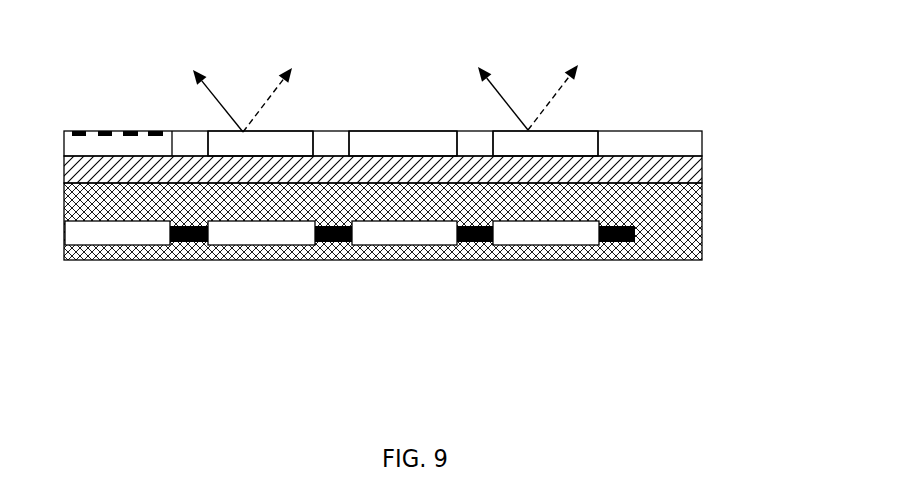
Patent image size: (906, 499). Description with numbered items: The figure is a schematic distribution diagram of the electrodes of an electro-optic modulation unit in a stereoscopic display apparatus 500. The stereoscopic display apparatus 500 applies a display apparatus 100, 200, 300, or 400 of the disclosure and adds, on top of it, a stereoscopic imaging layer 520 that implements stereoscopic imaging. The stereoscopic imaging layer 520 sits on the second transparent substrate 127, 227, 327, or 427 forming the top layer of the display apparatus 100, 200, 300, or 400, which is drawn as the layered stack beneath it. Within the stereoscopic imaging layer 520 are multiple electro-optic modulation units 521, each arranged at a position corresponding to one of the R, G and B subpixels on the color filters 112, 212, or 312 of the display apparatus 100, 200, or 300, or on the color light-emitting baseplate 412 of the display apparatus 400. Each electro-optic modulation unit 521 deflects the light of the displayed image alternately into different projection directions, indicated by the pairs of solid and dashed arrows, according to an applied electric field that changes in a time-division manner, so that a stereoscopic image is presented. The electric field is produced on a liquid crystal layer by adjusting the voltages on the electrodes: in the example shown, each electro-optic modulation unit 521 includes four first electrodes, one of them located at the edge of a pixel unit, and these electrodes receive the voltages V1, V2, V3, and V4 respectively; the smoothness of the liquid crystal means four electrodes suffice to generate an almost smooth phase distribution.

The stereoscopic display apparatus 500 is at (407, 46).
The stereoscopic imaging layer 520 is at (703, 143).
The electro-optic modulation unit 521 is at (403, 143).
The voltage V1 is at (79, 131).
The voltage V2 is at (104, 131).
The voltage V3 is at (130, 131).
The voltage V4 is at (155, 131).
The display apparatus 100 is at (383, 270).
The display apparatus 200 is at (383, 270).
The display apparatus 300 is at (383, 270).
The display apparatus 400 is at (355, 260).
The second transparent substrate 127 is at (252, 289).
The second transparent substrate 227 is at (252, 289).
The second transparent substrate 327 is at (252, 289).
The second transparent substrate 427 is at (85, 222).
The color filter 112 is at (605, 289).
The color filter 212 is at (605, 289).
The color filter 312 is at (605, 289).
The color light-emitting baseplate 412 is at (558, 238).